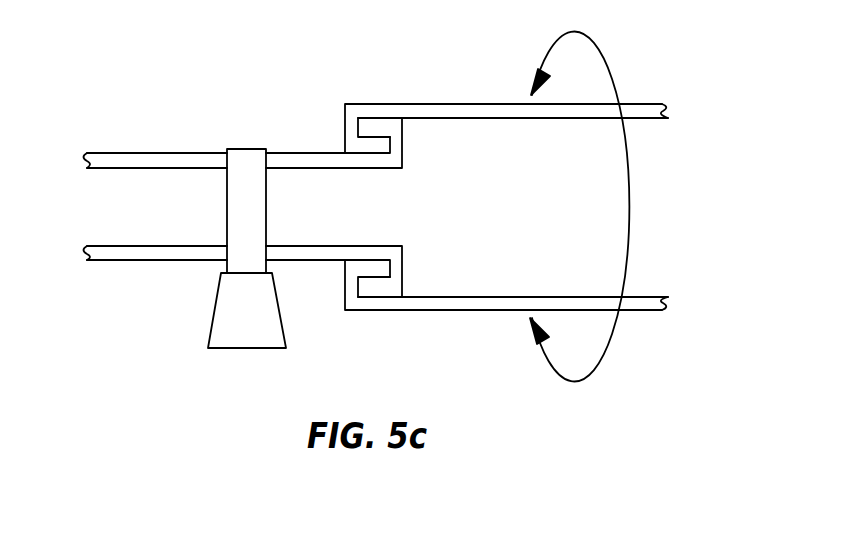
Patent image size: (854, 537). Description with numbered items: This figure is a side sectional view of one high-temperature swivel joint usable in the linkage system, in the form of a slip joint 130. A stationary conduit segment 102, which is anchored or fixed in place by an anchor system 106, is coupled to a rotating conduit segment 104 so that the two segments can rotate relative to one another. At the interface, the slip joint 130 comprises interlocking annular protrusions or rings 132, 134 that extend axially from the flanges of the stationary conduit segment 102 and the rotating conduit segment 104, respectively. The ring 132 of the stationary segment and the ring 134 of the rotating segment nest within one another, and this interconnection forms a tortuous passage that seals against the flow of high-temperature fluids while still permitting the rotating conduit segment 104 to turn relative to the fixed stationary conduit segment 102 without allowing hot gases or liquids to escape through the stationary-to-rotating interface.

The stationary conduit segment 102 is at (185, 153).
The rotating conduit segment 104 is at (653, 103).
The anchor system 106 is at (216, 291).
The slip joint 130 is at (330, 78).
The annular protrusion 132 is at (375, 128).
The annular protrusion 134 is at (370, 145).